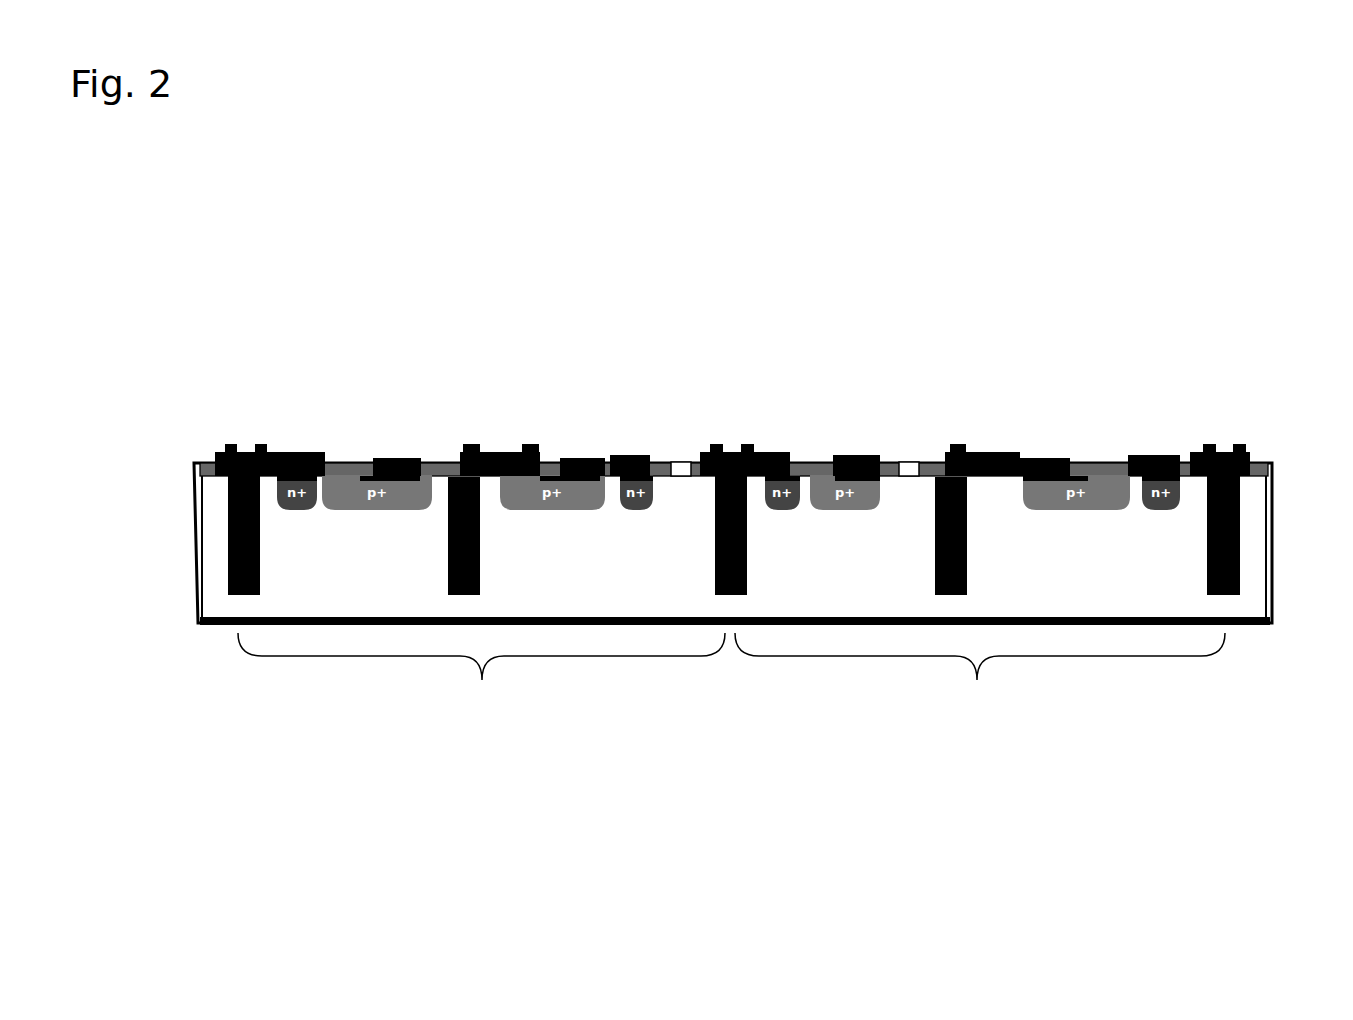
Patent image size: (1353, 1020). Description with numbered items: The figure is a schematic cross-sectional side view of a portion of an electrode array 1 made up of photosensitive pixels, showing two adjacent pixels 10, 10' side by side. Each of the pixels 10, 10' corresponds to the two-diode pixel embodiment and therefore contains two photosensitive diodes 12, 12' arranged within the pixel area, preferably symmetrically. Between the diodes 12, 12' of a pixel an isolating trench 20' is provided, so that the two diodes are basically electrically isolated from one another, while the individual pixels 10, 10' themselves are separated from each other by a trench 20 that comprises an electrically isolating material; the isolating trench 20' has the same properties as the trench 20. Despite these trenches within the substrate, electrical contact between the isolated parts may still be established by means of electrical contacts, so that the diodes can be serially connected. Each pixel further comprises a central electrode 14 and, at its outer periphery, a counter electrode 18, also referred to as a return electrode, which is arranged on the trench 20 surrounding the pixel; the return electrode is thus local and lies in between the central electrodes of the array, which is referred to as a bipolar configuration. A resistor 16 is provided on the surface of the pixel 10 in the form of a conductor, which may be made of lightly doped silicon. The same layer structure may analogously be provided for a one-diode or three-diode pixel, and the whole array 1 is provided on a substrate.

The electrode array 1 is at (878, 275).
The photosensitive pixel 10 is at (980, 676).
The adjacent pixel 10' is at (481, 676).
The photosensitive diode 12 is at (875, 666).
The second diode 12' is at (340, 665).
The central electrode 14 is at (538, 446).
The resistor 16 is at (685, 478).
The counter electrode 18 is at (745, 445).
The trench 20 is at (732, 546).
The isolating trench 20' is at (896, 422).